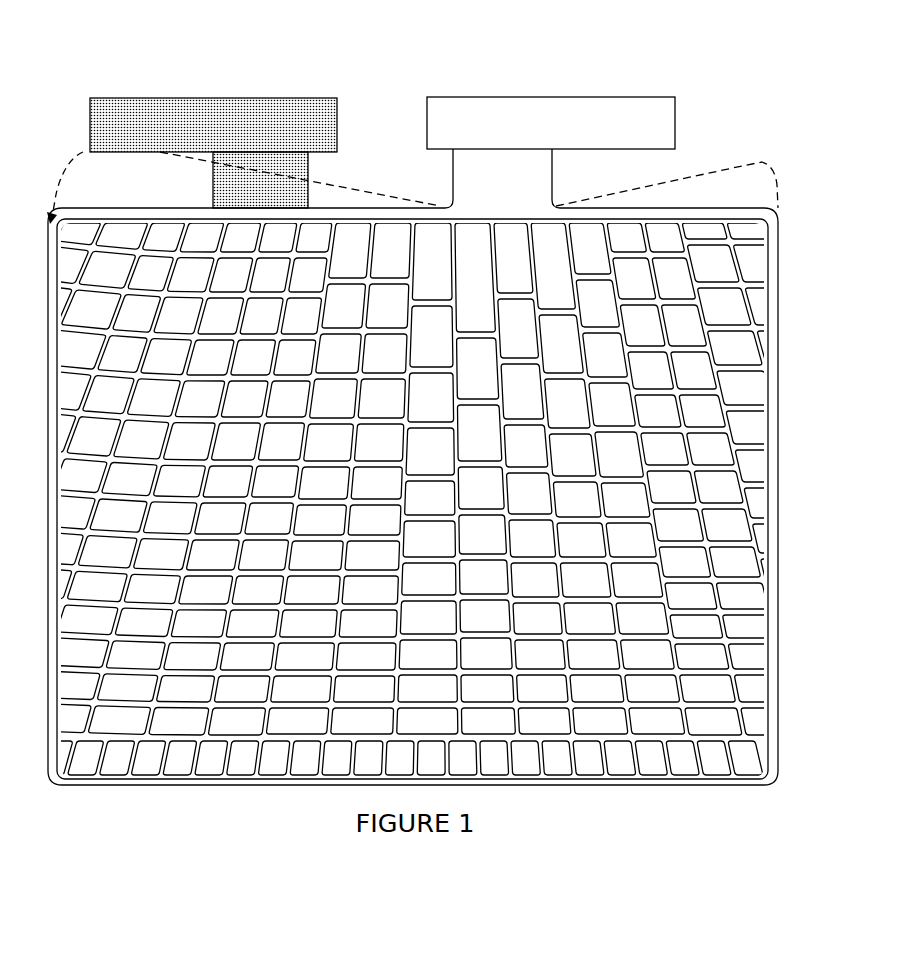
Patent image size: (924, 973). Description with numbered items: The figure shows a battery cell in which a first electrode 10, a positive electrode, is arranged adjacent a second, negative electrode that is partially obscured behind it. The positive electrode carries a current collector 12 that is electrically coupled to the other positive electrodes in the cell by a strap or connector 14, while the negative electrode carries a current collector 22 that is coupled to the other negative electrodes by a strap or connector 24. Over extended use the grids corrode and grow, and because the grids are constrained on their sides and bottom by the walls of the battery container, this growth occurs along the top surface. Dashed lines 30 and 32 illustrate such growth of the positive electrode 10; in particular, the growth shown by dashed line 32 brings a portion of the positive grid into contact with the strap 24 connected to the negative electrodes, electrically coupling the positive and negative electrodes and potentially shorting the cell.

The first electrode 10 is at (777, 317).
The current collector 12 is at (551, 84).
The strap 14 is at (556, 97).
The current collector 22 is at (307, 163).
The strap 24 is at (160, 123).
The dashed line 30 is at (737, 168).
The dashed line 32 is at (83, 152).